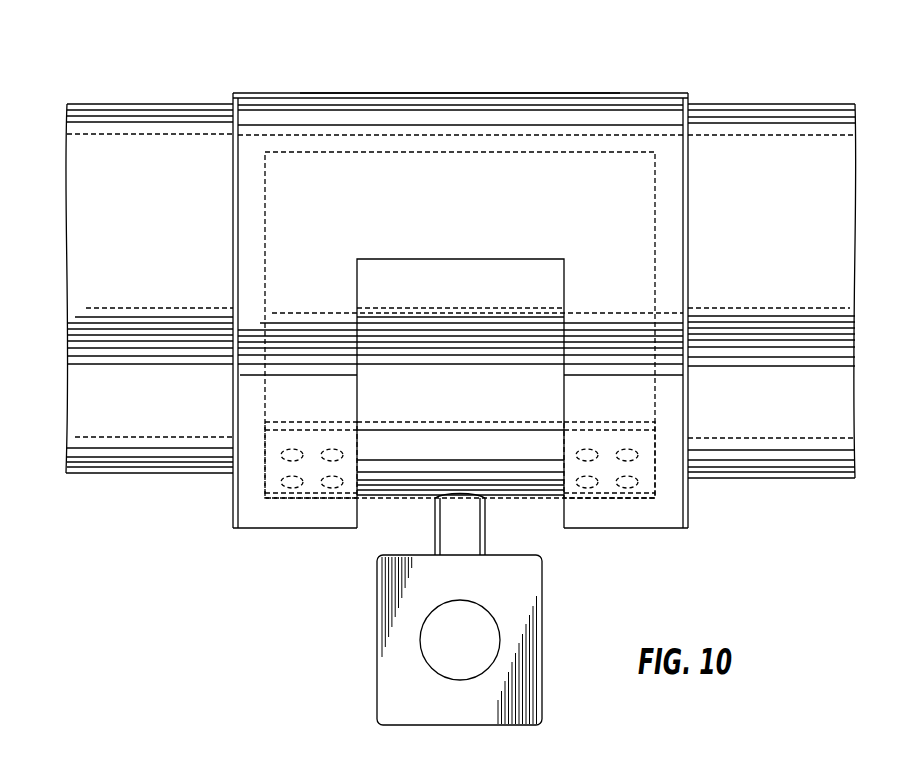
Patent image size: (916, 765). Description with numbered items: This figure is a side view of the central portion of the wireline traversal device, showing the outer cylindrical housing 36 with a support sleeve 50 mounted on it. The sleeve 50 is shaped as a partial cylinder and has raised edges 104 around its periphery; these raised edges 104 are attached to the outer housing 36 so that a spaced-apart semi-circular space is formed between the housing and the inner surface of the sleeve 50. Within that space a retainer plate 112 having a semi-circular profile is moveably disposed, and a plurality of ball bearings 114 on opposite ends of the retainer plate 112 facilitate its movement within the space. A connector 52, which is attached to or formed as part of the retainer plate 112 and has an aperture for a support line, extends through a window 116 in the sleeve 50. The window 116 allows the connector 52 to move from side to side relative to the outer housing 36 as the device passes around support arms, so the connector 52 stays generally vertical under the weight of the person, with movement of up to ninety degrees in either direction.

The outer cylindrical housing 36 is at (66, 445).
The support sleeve 50 is at (475, 94).
The connector 52 is at (545, 678).
The raised edges 104 is at (248, 147).
The retainer plate 112 is at (508, 475).
The ball bearings 114 is at (330, 485).
The window 116 is at (358, 400).